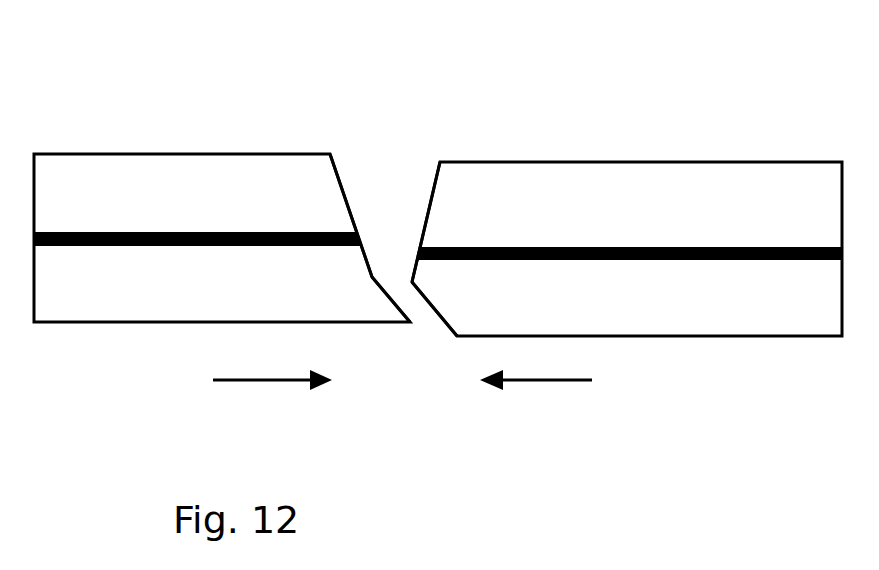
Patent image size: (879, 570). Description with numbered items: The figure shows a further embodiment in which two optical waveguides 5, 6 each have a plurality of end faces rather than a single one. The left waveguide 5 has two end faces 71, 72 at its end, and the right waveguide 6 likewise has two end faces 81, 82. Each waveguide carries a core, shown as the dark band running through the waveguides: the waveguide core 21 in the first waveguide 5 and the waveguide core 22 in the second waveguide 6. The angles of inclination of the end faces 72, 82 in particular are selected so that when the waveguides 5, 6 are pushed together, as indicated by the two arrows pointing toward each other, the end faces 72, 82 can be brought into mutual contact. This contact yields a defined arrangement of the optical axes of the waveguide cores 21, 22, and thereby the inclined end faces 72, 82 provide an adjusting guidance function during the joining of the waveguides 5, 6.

The waveguide 5 is at (128, 155).
The waveguide 6 is at (593, 162).
The waveguide core 21 is at (80, 245).
The waveguide core 22 is at (690, 260).
The end face 71 is at (337, 178).
The end face 72 is at (380, 287).
The end face 81 is at (428, 213).
The end face 82 is at (425, 335).